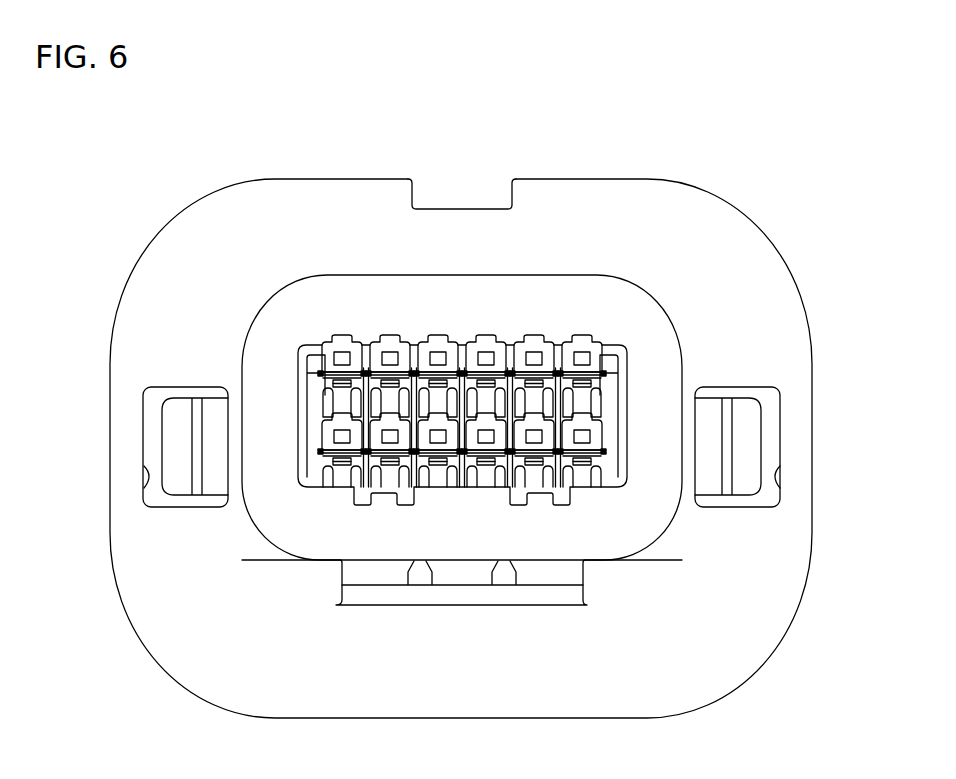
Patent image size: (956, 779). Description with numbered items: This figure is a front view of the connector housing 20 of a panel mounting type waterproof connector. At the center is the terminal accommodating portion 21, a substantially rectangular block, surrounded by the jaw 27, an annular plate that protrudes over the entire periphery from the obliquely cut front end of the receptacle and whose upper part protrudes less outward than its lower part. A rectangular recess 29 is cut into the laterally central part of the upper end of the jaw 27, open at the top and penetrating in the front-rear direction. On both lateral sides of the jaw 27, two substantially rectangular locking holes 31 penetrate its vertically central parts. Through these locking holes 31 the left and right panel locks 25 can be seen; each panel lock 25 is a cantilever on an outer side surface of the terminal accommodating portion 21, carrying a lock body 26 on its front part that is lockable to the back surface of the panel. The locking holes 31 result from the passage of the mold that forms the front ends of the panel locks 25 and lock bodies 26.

The connector housing 20 is at (379, 179).
The terminal accommodating portion 21 is at (630, 343).
The panel lock 25 is at (203, 398).
The lock body 26 is at (168, 430).
The jaw 27 is at (598, 197).
The recess 29 is at (476, 208).
The locking hole 31 is at (143, 465).